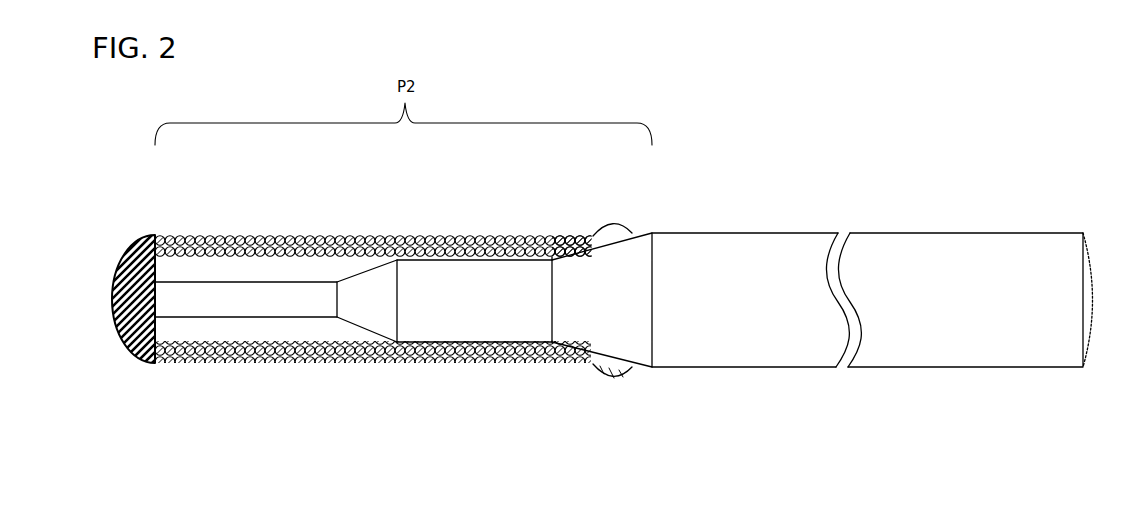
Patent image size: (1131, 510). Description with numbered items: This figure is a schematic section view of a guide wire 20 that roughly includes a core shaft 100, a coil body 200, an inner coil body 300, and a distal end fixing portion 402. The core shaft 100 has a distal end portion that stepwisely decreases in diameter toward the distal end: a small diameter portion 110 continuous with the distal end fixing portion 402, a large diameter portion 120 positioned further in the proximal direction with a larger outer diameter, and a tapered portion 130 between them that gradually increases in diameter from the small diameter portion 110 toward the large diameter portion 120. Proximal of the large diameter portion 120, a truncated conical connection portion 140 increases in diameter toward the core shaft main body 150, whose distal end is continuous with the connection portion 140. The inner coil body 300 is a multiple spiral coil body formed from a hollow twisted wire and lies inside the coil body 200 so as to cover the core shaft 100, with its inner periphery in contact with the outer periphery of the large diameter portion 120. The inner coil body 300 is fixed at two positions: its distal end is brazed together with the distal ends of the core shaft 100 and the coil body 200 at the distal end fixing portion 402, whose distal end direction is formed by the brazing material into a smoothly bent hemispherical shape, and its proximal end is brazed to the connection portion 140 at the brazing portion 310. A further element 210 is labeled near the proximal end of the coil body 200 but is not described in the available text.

The guide wire 20 is at (967, 211).
The core shaft 100 is at (727, 229).
The small diameter portion 110 is at (229, 296).
The large diameter portion 120 is at (502, 317).
The tapered portion 130 is at (382, 310).
The connection portion 140 is at (627, 330).
The core shaft main body 150 is at (770, 338).
The coil body 200 is at (357, 237).
The braid end portion 210 is at (622, 232).
The inner coil body 300 is at (423, 247).
The brazing portion 310 is at (566, 240).
The distal end fixing portion 402 is at (128, 348).